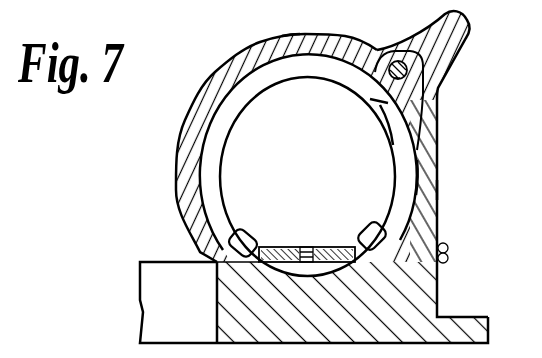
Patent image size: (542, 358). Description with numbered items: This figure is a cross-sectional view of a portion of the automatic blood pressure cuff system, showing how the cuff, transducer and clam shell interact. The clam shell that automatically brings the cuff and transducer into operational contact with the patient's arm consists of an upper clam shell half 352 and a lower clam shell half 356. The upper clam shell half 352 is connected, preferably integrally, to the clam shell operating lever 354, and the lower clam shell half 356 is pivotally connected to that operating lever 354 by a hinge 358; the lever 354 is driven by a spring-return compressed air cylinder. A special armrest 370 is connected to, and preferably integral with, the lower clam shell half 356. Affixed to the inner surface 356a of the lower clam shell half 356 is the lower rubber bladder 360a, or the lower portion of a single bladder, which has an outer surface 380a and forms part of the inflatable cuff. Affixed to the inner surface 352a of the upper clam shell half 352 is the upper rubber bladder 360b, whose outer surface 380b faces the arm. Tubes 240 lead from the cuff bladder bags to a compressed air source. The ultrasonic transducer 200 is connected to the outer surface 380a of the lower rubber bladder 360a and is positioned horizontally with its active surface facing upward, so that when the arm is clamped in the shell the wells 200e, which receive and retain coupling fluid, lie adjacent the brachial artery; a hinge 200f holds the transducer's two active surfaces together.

The upper clam shell half 352 is at (323, 36).
The inner surface of upper clam shell 352a is at (290, 34).
The clam shell operating lever 354 is at (460, 19).
The lower clam shell half 356 is at (417, 228).
The inner surface of lower clam shell 356a is at (413, 190).
The hinge 358 is at (408, 69).
The lower rubber bladder 360a is at (408, 150).
The upper rubber bladder 360b is at (206, 190).
The outer surface of lower rubber bladder 380a is at (385, 126).
The outer surface of upper rubber bladder 380b is at (220, 145).
The ultrasonic transducer 200 is at (250, 263).
The well 200e is at (282, 249).
The hinge 200f is at (306, 264).
The tubes 240 is at (440, 264).
The armrest 370 is at (146, 332).